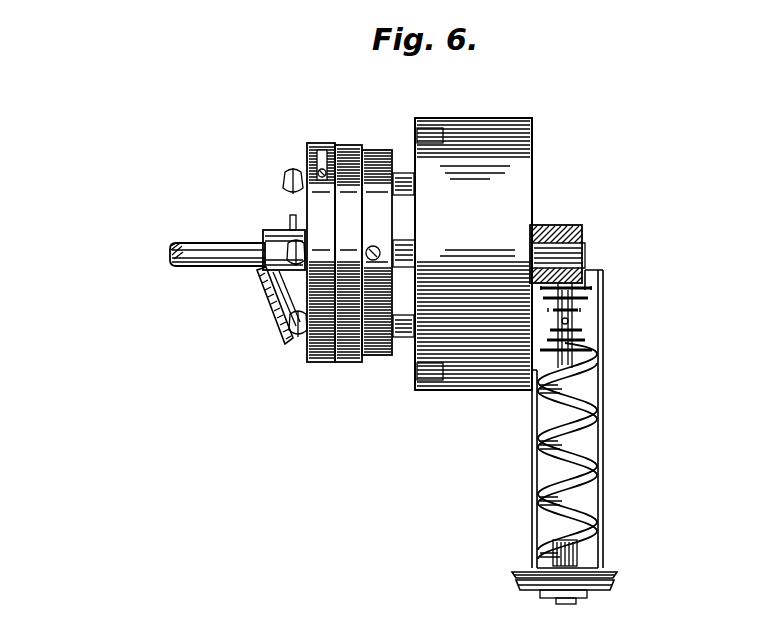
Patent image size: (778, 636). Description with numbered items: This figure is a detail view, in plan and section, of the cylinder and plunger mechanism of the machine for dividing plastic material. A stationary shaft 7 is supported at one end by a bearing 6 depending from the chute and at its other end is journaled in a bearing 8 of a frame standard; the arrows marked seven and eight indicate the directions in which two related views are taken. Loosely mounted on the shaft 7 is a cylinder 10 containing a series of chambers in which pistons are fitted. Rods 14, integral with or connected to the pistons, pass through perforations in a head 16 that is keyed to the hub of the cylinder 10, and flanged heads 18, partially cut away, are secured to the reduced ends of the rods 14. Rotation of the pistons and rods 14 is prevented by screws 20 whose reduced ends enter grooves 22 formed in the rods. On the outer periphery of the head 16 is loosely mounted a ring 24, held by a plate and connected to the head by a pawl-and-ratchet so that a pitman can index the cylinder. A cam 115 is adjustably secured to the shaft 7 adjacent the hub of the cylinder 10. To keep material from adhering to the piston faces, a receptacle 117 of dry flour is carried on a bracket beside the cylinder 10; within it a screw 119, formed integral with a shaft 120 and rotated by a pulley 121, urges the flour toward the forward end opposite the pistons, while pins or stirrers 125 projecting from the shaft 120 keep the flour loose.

The bearing 6 is at (554, 228).
The stationary shaft 7 is at (204, 255).
The bearing 8 is at (722, 255).
The cylinder 10 is at (473, 254).
The rods 14 is at (403, 240).
The head 16 is at (377, 252).
The flanged heads 18 is at (295, 248).
The screws 20 is at (404, 242).
The grooves 22 is at (381, 253).
The ring 24 is at (322, 362).
The cam 115 is at (275, 305).
The receptacle 117 is at (604, 391).
The screw 119 is at (574, 469).
The shaft 120 is at (578, 553).
The pulley 121 is at (616, 578).
The pins or stirrers 125 is at (592, 350).